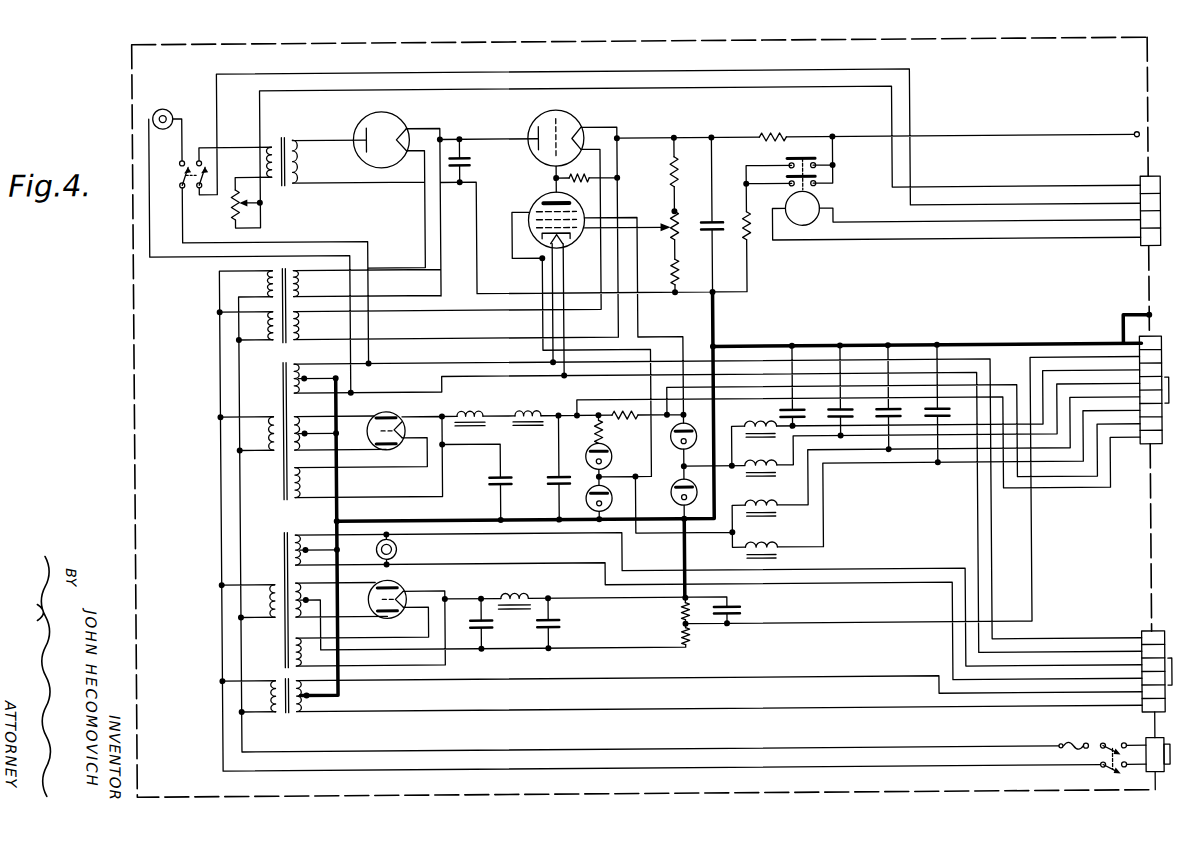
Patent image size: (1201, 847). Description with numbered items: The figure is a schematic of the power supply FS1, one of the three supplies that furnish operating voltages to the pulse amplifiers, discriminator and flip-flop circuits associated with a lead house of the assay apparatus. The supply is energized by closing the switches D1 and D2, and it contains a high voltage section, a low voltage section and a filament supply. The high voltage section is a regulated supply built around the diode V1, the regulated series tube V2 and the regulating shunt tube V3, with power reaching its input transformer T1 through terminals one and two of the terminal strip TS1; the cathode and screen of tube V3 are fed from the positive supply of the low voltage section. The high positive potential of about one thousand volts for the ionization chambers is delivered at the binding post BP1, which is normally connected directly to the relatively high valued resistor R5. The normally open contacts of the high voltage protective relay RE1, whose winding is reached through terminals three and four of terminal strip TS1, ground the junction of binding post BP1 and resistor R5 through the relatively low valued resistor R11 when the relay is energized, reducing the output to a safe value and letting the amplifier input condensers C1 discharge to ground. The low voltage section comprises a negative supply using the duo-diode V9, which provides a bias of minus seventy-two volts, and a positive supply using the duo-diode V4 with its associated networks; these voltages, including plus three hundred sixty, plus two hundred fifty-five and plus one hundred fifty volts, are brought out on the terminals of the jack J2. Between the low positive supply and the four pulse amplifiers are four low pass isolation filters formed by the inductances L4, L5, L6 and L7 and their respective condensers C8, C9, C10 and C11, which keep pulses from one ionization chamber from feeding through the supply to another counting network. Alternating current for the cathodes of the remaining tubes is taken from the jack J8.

The switch D1 is at (183, 174).
The input transformer T1 is at (281, 152).
The diode V1 is at (370, 140).
The condenser C1 is at (470, 160).
The regulated series tube V2 is at (543, 138).
The regulating shunt tube V3 is at (550, 279).
The resistor R5 is at (772, 126).
The resistor R11 is at (752, 228).
The high voltage protective relay RE1 is at (802, 191).
The binding post BP1 is at (1156, 134).
The terminal strip TS1 is at (1165, 211).
The power supply FS1 is at (981, 306).
The jack J2 is at (1162, 390).
The duo-diode V4 is at (373, 431).
The inductance L4 is at (760, 422).
The inductance L5 is at (761, 461).
The inductance L6 is at (761, 501).
The inductance L7 is at (761, 543).
The condenser C8 is at (801, 414).
The condenser C9 is at (849, 413).
The condenser C10 is at (901, 413).
The condenser C11 is at (950, 412).
The duo-diode V9 is at (374, 599).
The jack J8 is at (1165, 672).
The switch D2 is at (1114, 749).